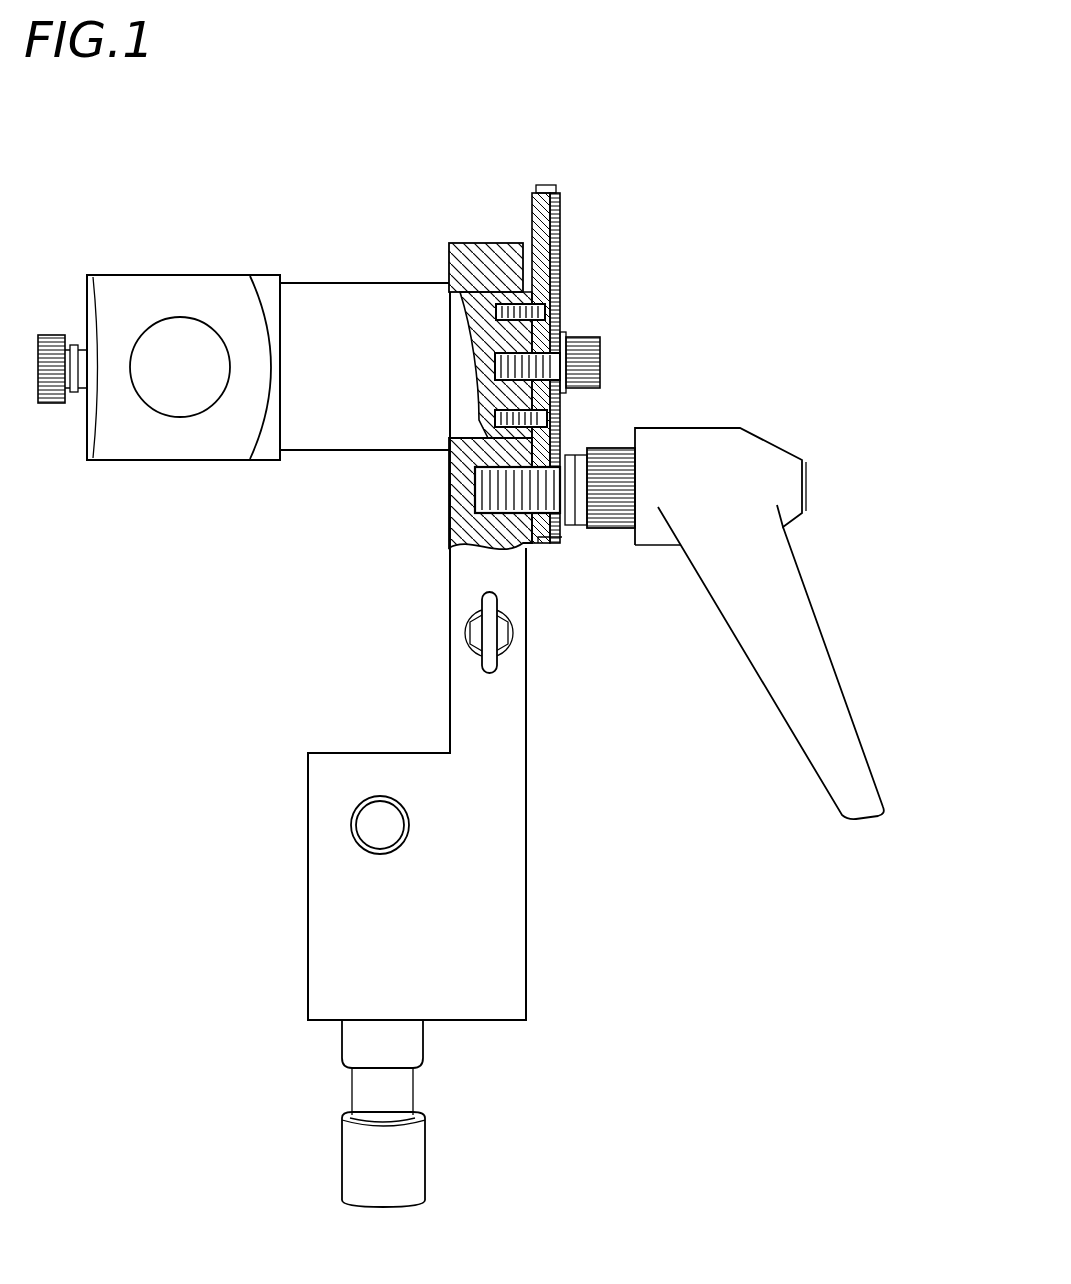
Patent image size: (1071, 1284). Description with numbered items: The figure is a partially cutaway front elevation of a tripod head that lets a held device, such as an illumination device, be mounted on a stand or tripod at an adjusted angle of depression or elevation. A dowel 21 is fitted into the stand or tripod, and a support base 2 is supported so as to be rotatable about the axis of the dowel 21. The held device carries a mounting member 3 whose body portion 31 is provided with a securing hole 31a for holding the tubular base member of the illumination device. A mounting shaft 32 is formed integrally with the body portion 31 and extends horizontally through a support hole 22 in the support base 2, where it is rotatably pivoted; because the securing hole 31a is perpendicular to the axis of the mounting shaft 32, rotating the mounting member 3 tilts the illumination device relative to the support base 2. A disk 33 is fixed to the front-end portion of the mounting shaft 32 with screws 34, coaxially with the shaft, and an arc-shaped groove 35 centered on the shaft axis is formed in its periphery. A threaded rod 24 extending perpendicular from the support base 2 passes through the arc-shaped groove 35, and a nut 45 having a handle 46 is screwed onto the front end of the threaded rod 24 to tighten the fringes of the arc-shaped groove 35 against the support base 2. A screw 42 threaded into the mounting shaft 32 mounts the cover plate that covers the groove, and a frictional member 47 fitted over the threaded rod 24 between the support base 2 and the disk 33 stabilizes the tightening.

The support base 2 is at (555, 925).
The mounting member 3 is at (281, 231).
The dowel 21 is at (410, 1155).
The support hole 22 is at (452, 418).
The threaded rod 24 is at (528, 487).
The body portion 31 is at (185, 295).
The securing hole 31a is at (140, 393).
The mounting shaft 32 is at (372, 300).
The disk 33 is at (558, 202).
The screws 34 is at (556, 350).
The arc-shaped groove 35 is at (547, 497).
The screw 42 is at (600, 342).
The nut 45 is at (613, 505).
The handle 46 is at (812, 675).
The frictional member 47 is at (528, 525).